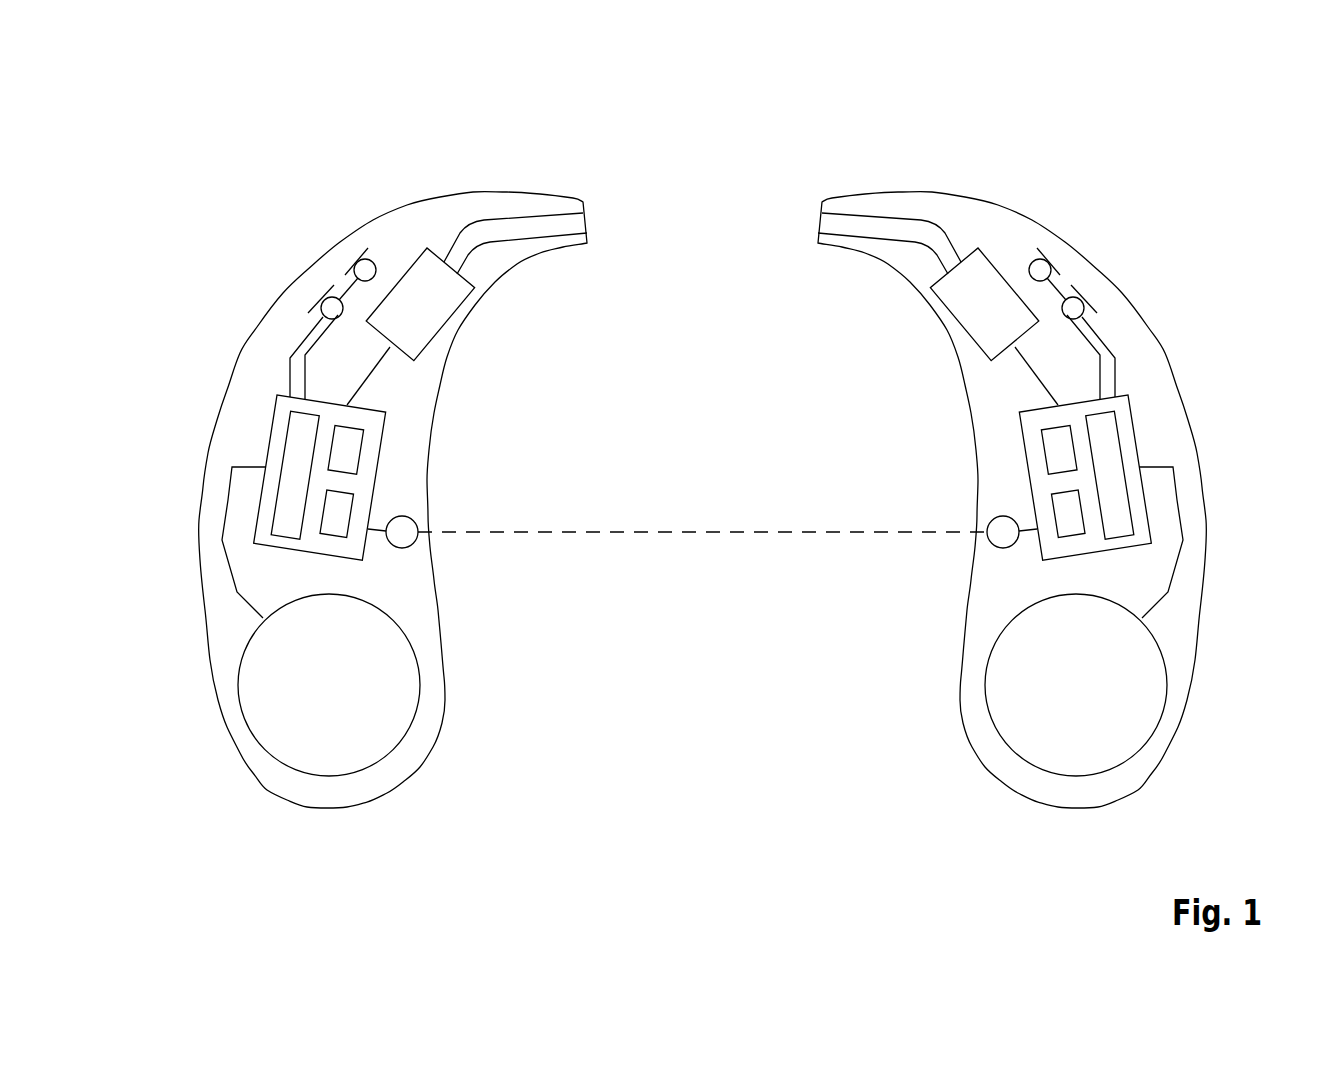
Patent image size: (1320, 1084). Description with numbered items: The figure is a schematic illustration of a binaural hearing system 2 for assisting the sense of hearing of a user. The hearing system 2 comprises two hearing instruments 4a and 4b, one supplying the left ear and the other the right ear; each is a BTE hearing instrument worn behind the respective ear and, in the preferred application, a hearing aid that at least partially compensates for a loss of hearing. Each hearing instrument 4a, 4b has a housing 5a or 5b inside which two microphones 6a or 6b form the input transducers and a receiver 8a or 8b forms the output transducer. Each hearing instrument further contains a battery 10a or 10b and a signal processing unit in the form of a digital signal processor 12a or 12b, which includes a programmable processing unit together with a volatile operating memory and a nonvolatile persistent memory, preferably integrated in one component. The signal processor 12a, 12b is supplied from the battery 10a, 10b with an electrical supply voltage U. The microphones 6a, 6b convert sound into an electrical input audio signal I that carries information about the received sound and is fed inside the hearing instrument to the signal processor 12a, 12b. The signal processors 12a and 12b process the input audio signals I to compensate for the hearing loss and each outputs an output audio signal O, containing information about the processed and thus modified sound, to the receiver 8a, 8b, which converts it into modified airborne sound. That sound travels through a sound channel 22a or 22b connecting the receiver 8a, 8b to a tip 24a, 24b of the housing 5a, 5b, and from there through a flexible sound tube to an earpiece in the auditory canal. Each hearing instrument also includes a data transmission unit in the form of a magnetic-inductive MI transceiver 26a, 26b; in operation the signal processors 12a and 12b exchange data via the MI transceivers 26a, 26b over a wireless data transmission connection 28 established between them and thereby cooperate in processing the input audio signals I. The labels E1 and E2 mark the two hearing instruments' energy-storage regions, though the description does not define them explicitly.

The binaural hearing system 2 is at (702, 469).
The hearing instrument 4a is at (700, 505).
The hearing instrument 4b is at (978, 511).
The housing 5a is at (445, 697).
The housing 5b is at (980, 694).
The microphones 6a is at (360, 252).
The microphones 6b is at (1100, 259).
The receiver 8a is at (467, 307).
The receiver 8b is at (944, 304).
The battery 10a is at (358, 777).
The battery 10b is at (1071, 777).
The digital signal processor 12a is at (327, 477).
The digital signal processor 12b is at (1072, 477).
The sound channel 22a is at (530, 213).
The sound channel 22b is at (889, 208).
The tip 24a is at (600, 219).
The tip 24b is at (806, 222).
The MI transceiver 26a is at (417, 535).
The MI transceiver 26b is at (965, 547).
The wireless data transmission connection 28 is at (705, 529).
The first energy storage E1 is at (281, 740).
The second energy storage E2 is at (1135, 732).
The input audio signal I is at (305, 352).
The output audio signal O is at (370, 378).
The electrical supply voltage U is at (230, 563).